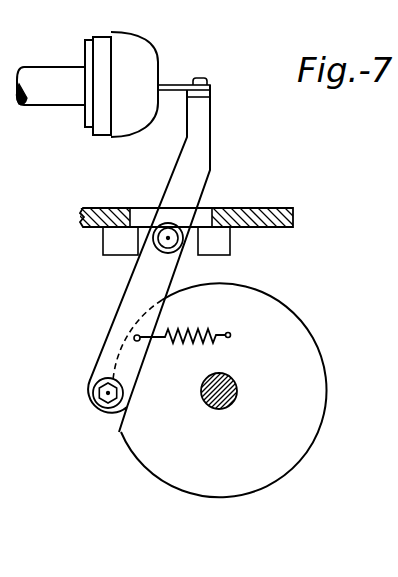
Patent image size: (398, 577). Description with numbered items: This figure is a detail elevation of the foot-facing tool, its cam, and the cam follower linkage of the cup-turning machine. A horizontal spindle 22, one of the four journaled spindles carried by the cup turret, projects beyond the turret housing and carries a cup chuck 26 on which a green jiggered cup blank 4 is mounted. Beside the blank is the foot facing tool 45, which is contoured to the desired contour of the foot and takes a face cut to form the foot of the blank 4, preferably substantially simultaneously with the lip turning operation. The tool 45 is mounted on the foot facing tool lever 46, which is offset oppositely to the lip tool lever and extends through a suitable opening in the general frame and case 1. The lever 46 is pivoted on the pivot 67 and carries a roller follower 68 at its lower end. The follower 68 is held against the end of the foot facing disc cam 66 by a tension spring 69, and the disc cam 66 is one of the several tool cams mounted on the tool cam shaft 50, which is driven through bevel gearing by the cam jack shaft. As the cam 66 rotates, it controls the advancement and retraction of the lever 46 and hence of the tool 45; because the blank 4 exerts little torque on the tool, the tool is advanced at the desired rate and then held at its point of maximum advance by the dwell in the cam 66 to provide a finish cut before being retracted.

The general frame and case 1 is at (270, 208).
The green jiggered cup blank 4 is at (143, 47).
The spindle 22 is at (43, 65).
The cup chuck 26 is at (93, 37).
The foot facing tool 45 is at (173, 83).
The foot facing tool lever 46 is at (208, 158).
The tool cam shaft 50 is at (235, 380).
The foot facing disc cam 66 is at (308, 366).
The pivot 67 is at (183, 248).
The roller follower 68 is at (95, 383).
The tension spring 69 is at (213, 328).